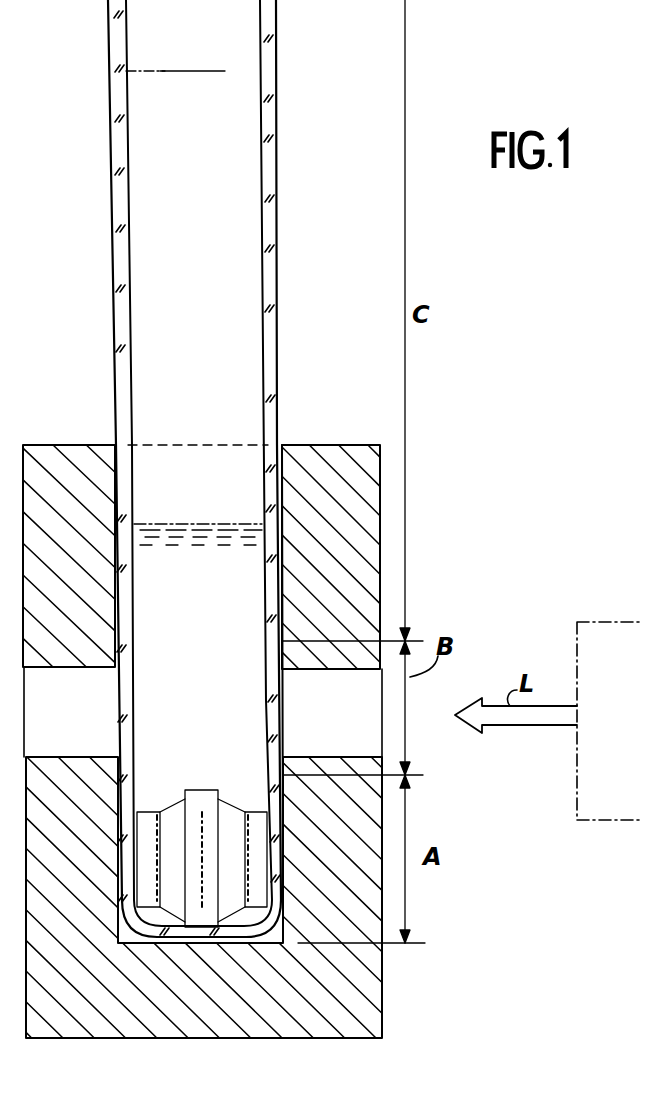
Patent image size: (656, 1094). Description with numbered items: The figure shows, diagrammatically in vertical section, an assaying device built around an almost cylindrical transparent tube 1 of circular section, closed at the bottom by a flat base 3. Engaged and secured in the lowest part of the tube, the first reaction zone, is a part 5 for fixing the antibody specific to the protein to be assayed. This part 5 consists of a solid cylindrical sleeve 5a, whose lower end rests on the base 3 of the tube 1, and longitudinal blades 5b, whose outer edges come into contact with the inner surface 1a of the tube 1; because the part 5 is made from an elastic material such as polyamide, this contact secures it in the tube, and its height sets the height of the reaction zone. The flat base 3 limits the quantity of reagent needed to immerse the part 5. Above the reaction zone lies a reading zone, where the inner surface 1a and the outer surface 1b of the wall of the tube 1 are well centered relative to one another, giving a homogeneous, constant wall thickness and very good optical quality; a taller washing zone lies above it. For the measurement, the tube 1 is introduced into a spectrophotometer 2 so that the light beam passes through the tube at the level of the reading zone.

The transparent tube 1 is at (221, 468).
The inner surface 1a is at (258, 311).
The outer surface 1b is at (279, 368).
The spectrophotometer 2 is at (315, 447).
The flat base 3 is at (285, 948).
The part for fixing the antibody 5 is at (202, 799).
The solid cylindrical sleeve 5a is at (216, 795).
The longitudinal blades 5b is at (143, 812).